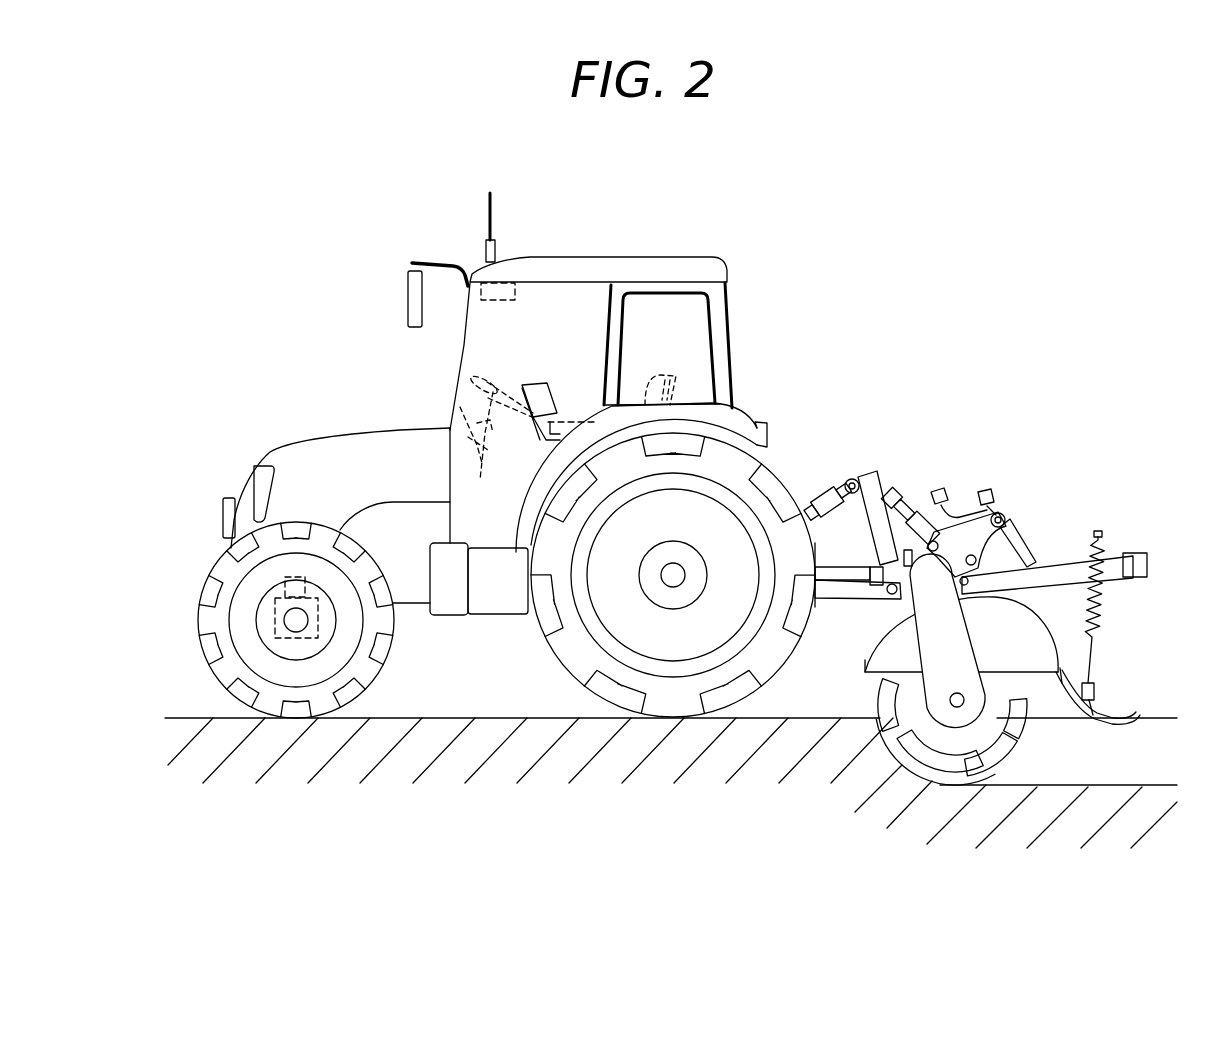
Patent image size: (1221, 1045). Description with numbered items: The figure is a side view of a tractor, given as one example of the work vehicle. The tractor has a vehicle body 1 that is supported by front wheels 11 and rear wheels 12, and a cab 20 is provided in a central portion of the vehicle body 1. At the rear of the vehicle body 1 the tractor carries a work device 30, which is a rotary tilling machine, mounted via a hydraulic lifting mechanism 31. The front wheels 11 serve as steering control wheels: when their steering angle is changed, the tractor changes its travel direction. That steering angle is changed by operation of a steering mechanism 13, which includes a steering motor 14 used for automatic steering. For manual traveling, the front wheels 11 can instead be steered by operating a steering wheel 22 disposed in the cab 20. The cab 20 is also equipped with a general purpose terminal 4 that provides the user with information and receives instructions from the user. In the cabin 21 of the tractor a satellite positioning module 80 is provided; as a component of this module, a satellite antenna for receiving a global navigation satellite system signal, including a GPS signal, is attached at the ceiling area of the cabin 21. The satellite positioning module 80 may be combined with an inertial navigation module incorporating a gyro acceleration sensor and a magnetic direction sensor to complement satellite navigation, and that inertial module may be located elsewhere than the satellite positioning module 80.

The vehicle body 1 is at (442, 640).
The front wheels 11 is at (288, 713).
The rear wheels 12 is at (688, 695).
The steering mechanism 13 is at (275, 617).
The steering motor 14 is at (286, 588).
The cab 20 is at (533, 383).
The cabin 21 is at (707, 268).
The steering wheel 22 is at (498, 382).
The general purpose terminal 4 is at (553, 384).
The satellite positioning module 80 is at (513, 244).
The work device 30 is at (954, 774).
The hydraulic lifting mechanism 31 is at (902, 462).